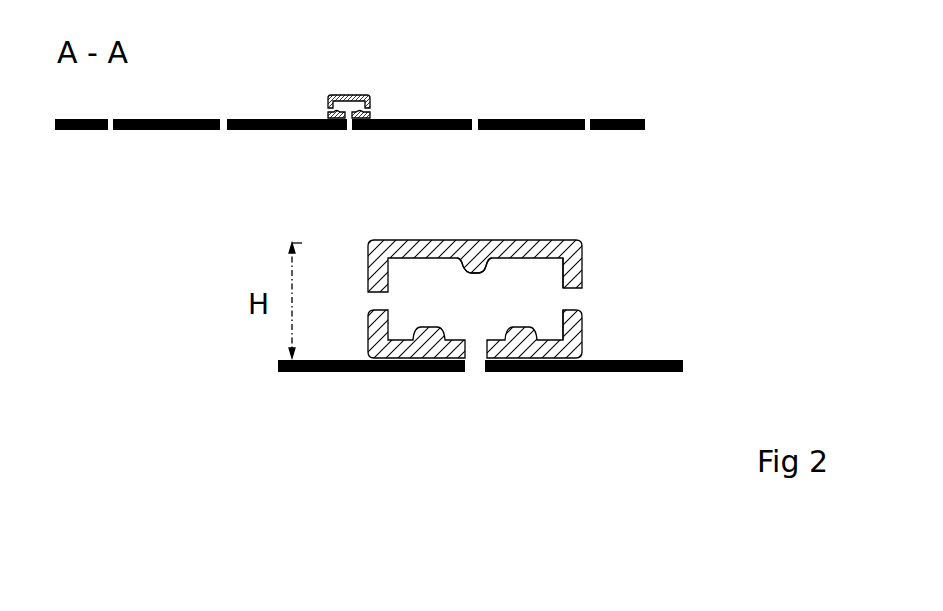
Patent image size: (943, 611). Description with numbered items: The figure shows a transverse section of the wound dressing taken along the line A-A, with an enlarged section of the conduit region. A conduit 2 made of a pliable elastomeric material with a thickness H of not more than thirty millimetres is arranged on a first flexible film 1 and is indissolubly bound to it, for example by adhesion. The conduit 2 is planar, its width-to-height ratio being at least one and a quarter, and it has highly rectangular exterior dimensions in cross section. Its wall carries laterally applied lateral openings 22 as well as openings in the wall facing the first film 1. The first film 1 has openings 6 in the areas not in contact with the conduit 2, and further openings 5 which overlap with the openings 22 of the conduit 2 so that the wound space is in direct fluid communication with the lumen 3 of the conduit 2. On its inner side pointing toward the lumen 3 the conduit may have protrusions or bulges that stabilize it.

The first flexible film 1 is at (653, 355).
The conduit 2 is at (357, 82).
The lumen 3 is at (503, 272).
The openings 5 is at (477, 380).
The openings 6 is at (220, 137).
The lateral openings 22 is at (472, 347).